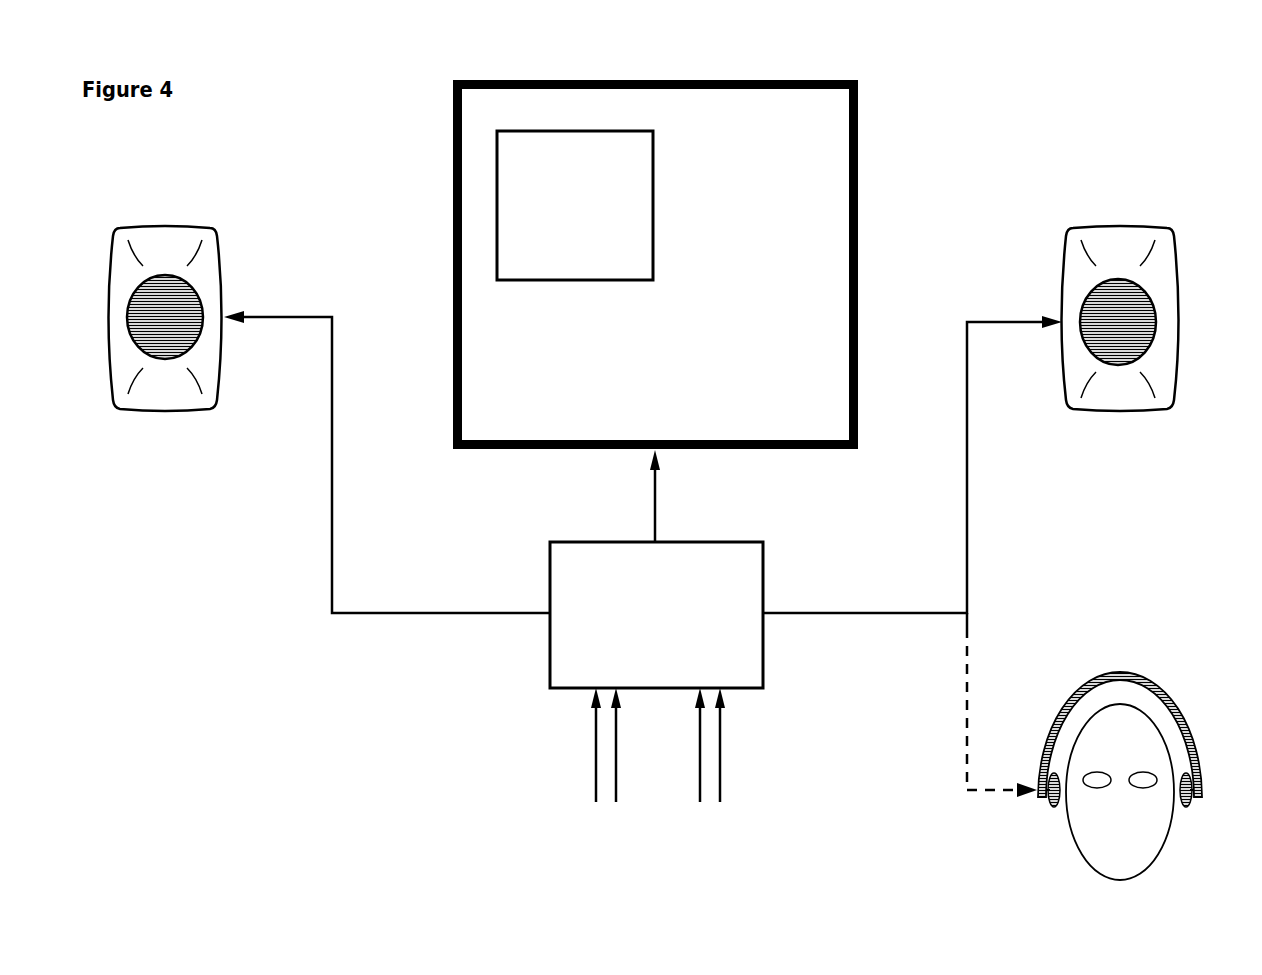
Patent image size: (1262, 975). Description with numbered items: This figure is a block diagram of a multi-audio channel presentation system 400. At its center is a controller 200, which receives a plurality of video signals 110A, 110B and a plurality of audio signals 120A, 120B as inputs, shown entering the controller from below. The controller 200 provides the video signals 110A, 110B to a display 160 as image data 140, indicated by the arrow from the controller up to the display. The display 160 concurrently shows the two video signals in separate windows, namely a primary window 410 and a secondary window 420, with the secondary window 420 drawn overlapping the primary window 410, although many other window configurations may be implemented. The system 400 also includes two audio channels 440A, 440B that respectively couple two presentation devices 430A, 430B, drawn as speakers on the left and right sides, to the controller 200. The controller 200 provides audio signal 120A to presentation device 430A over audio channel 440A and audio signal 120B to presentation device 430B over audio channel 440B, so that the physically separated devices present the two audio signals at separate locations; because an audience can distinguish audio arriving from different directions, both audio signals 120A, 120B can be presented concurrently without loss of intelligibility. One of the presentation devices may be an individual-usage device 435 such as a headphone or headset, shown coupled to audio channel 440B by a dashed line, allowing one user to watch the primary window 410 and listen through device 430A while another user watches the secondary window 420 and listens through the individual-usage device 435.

The system 400 is at (1016, 134).
The display 160 is at (742, 80).
The primary window 410 is at (836, 424).
The secondary window 420 is at (624, 258).
The controller 200 is at (752, 677).
The image data 140 is at (650, 502).
The video signal 110A is at (592, 734).
The audio signal 120A is at (619, 733).
The video signal 110B is at (696, 776).
The audio signal 120B is at (723, 774).
The audio channel 440A is at (437, 612).
The audio channel 440B is at (857, 612).
The presentation device 430A is at (110, 290).
The presentation device 430B is at (1172, 266).
The individual-usage device 435 is at (1187, 727).